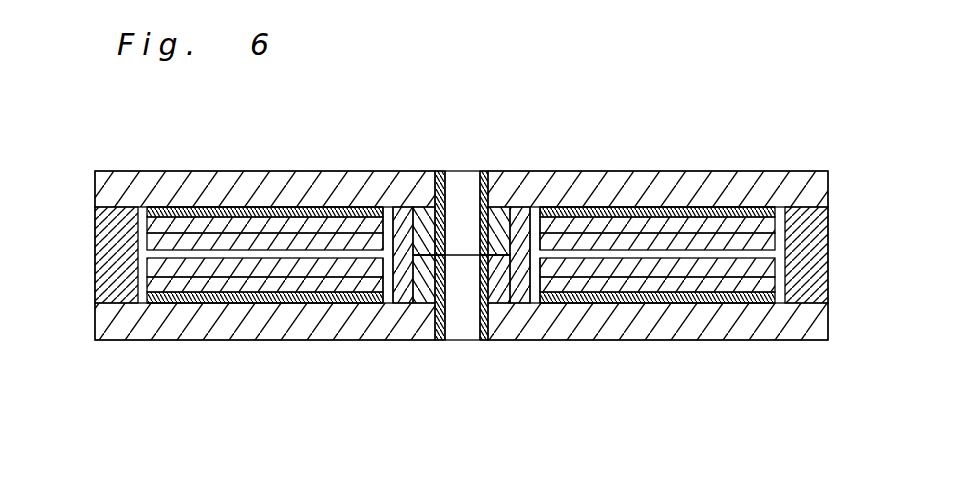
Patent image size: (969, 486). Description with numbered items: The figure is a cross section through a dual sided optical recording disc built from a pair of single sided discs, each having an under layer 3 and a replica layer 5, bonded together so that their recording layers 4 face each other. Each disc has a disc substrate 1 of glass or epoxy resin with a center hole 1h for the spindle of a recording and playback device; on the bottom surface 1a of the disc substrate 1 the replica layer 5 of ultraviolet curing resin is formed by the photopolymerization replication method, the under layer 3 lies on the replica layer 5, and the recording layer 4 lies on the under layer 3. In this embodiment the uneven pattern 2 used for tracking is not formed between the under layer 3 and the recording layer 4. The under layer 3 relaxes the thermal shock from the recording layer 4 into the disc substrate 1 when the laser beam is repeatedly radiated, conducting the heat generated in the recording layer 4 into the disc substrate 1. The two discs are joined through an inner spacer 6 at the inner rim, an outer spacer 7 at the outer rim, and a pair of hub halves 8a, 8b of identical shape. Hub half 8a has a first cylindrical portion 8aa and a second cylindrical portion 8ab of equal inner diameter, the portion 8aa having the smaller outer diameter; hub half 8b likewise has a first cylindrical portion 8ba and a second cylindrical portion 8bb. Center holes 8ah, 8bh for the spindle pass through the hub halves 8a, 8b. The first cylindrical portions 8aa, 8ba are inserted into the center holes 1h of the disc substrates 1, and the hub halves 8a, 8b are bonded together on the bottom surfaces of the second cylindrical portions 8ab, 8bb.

The disc substrate 1 is at (594, 186).
The bottom surface of the disc substrate 1a is at (530, 205).
The center hole 1h is at (426, 207).
The uneven pattern 2 is at (633, 214).
The under layer 3 is at (672, 225).
The recording layer 4 is at (708, 242).
The replica layer 5 is at (747, 212).
The inner spacer 6 is at (403, 205).
The outer spacer 7 is at (108, 240).
The hub half 8a is at (514, 149).
The first cylindrical portion 8aa is at (485, 200).
The second cylindrical portion 8ab is at (520, 205).
The center hole 8ah is at (443, 198).
The hub half 8b is at (490, 364).
The first cylindrical portion 8ba is at (478, 305).
The second cylindrical portion 8bb is at (477, 283).
The center hole 8bh is at (445, 312).